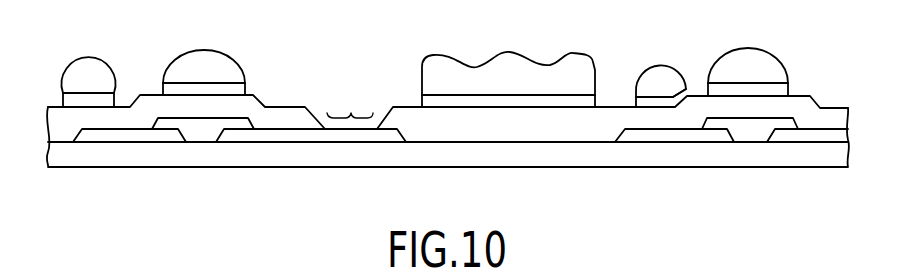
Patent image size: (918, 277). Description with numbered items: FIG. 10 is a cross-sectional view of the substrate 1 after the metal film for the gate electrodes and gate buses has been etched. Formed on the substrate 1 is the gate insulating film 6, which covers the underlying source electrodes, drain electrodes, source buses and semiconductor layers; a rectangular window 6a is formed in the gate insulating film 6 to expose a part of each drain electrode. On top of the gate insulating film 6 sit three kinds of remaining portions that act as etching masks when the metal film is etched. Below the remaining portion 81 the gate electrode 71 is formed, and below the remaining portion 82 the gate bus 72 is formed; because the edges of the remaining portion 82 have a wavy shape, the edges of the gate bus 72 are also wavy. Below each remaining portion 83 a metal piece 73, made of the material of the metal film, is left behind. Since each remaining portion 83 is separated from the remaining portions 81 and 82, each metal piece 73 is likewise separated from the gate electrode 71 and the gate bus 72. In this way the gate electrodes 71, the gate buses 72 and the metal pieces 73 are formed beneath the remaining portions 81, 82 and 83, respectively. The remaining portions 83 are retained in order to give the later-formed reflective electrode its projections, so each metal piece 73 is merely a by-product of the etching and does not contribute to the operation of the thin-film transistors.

The substrate 1 is at (459, 155).
The gate insulating film 6 is at (258, 108).
The rectangular window 6a is at (350, 102).
The gate electrode 71 is at (212, 90).
The gate bus 72 is at (73, 98).
The metal piece 73 is at (647, 102).
The remaining portion 81 is at (190, 65).
The remaining portion 82 is at (510, 70).
The remaining portion 83 is at (87, 75).